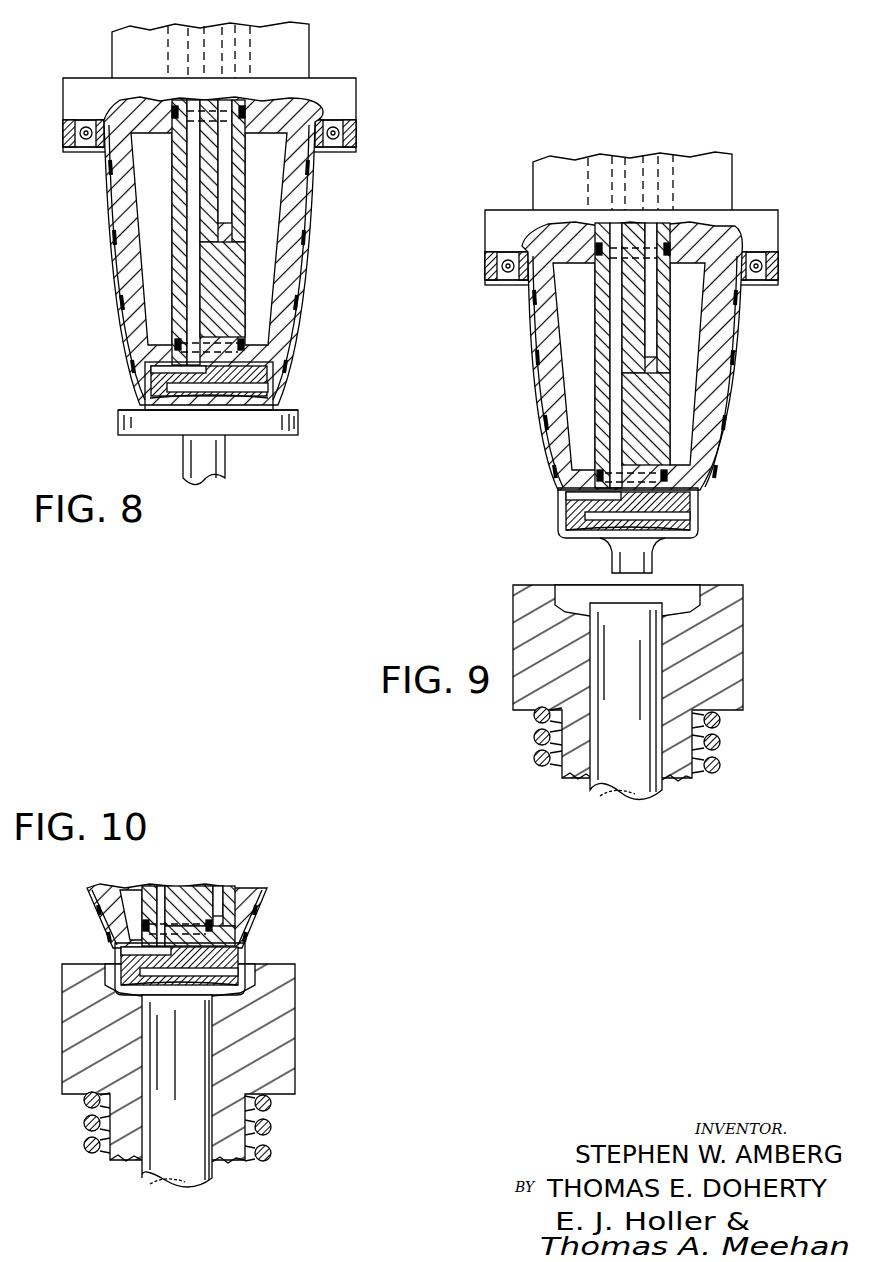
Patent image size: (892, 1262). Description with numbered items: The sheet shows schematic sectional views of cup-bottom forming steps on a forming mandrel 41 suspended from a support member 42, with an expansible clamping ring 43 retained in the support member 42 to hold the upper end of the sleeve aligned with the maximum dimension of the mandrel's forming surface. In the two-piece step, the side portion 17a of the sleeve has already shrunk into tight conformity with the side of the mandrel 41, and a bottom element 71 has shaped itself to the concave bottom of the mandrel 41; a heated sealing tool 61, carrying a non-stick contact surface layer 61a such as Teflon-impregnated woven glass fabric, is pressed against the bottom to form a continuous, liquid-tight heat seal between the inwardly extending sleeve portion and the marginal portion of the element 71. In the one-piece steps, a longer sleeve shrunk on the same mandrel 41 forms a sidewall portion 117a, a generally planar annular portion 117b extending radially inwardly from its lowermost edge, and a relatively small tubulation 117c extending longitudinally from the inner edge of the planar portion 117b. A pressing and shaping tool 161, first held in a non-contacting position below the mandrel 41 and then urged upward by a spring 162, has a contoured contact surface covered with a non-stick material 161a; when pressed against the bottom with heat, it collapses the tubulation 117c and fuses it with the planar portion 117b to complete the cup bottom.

In FIG. 8, the support member 42 is at (346, 95).
In FIG. 9, the support member 42 is at (769, 226).
In FIG. 8, the clamping ring 43 is at (328, 152).
In FIG. 9, the clamping ring 43 is at (755, 285).
In FIG. 8, the side portion of sleeve 17a is at (312, 247).
In FIG. 8, the forming mandrel 41 is at (320, 370).
In FIG. 9, the forming mandrel 41 is at (722, 519).
In FIG. 8, the bottom element 71 is at (224, 407).
In FIG. 8, the heated sealing tool 61 is at (298, 438).
In FIG. 8, the non-stick contact surface layer 61a is at (298, 412).
In FIG. 9, the sidewall portion 117a is at (735, 393).
In FIG. 10, the sidewall portion 117a is at (267, 907).
In FIG. 9, the planar annular portion 117b is at (677, 542).
In FIG. 10, the planar annular portion 117b is at (180, 969).
In FIG. 9, the tubulation 117c is at (610, 553).
In FIG. 10, the tubulation 117c is at (177, 1091).
In FIG. 9, the pressing and shaping tool 161 is at (743, 642).
In FIG. 10, the pressing and shaping tool 161 is at (296, 968).
In FIG. 9, the non-stick material 161a is at (672, 603).
In FIG. 10, the non-stick material 161a is at (257, 992).
In FIG. 9, the spring 162 is at (718, 742).
In FIG. 10, the spring 162 is at (270, 1127).